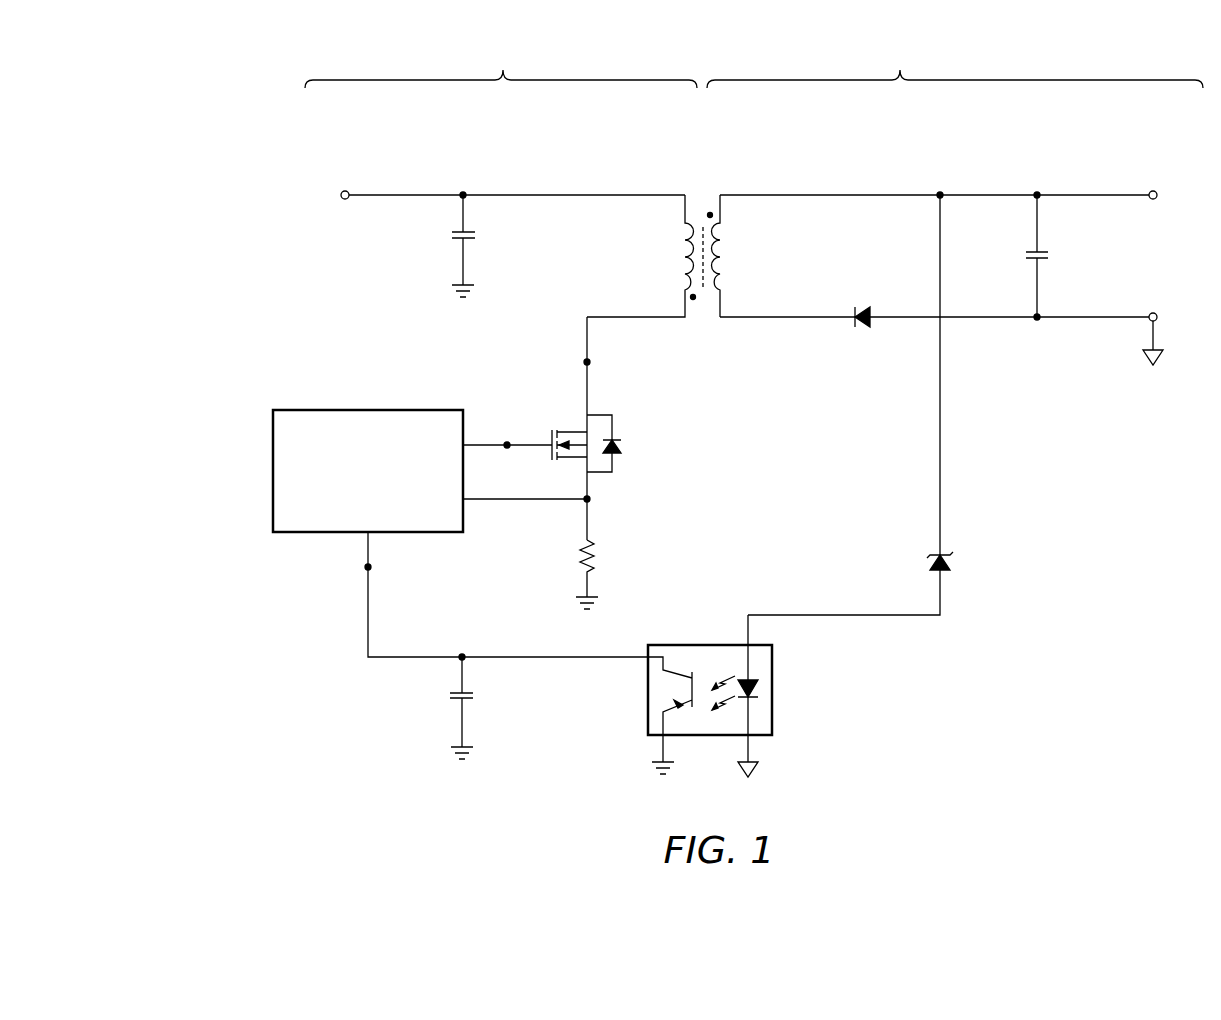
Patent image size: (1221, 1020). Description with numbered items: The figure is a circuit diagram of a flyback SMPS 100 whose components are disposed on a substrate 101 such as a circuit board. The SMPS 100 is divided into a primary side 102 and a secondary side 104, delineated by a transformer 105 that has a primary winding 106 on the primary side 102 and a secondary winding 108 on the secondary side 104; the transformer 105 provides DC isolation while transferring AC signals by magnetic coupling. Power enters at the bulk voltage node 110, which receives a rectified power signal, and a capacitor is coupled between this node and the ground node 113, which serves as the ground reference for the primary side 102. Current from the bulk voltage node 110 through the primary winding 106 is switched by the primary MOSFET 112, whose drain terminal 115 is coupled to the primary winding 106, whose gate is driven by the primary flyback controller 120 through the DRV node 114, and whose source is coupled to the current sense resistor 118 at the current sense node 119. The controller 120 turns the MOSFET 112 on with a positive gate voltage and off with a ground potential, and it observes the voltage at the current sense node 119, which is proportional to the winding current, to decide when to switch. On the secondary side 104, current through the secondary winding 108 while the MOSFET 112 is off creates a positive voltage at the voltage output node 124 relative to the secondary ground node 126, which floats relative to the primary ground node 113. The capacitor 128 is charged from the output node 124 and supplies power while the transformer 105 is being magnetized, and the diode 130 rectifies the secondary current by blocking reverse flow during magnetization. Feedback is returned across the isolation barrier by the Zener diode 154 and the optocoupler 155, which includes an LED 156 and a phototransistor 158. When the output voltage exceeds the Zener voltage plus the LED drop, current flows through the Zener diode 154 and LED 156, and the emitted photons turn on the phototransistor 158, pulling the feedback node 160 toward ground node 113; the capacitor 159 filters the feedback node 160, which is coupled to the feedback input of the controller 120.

The flyback SMPS 100 is at (245, 192).
The substrate 101 is at (267, 319).
The primary side 102 is at (501, 65).
The secondary side 104 is at (955, 66).
The transformer 105 is at (703, 205).
The primary winding 106 is at (685, 257).
The secondary winding 108 is at (720, 257).
The bulk voltage node 110 is at (342, 200).
The primary MOSFET 112 is at (598, 415).
The ground node 113 is at (452, 235).
The DRV node 114 is at (507, 442).
The drain terminal 115 is at (594, 362).
The current sense resistor 118 is at (600, 553).
The current sense node 119 is at (594, 499).
The primary flyback controller 120 is at (355, 410).
The voltage output node 124 is at (1157, 200).
The ground node 126 is at (1157, 312).
The capacitor 128 is at (1050, 255).
The diode 130 is at (862, 330).
The Zener diode 154 is at (952, 563).
The optocoupler 155 is at (690, 645).
The LED 156 is at (755, 682).
The phototransistor 158 is at (672, 678).
The capacitor 159 is at (452, 696).
The feedback node 160 is at (365, 567).